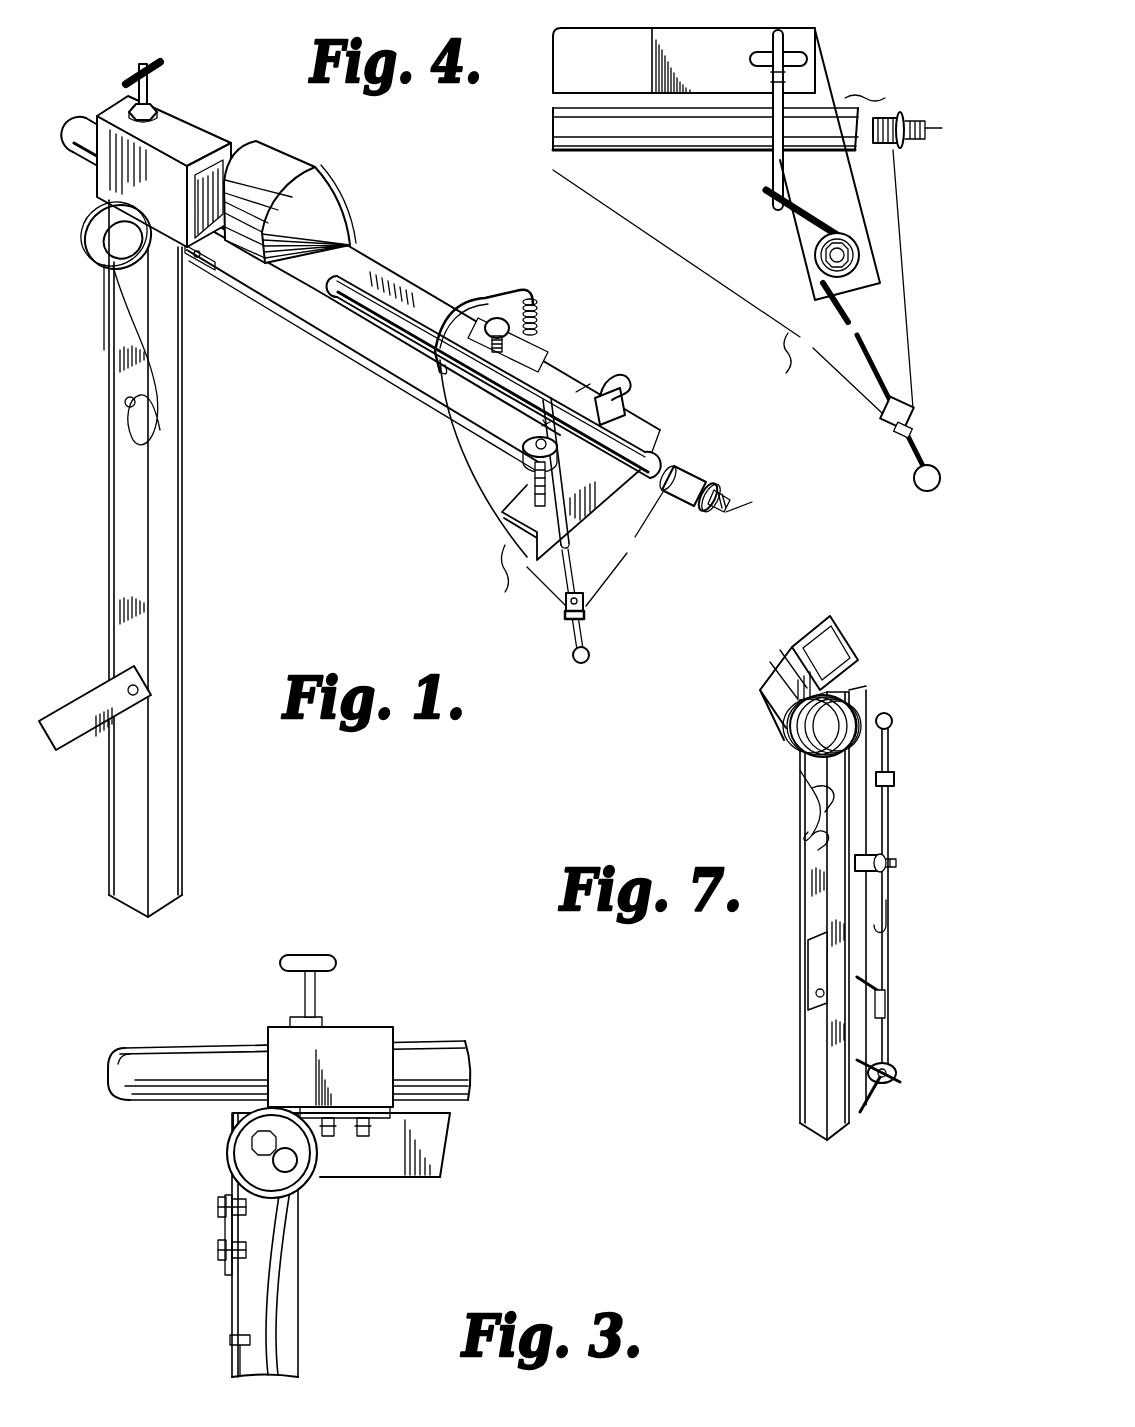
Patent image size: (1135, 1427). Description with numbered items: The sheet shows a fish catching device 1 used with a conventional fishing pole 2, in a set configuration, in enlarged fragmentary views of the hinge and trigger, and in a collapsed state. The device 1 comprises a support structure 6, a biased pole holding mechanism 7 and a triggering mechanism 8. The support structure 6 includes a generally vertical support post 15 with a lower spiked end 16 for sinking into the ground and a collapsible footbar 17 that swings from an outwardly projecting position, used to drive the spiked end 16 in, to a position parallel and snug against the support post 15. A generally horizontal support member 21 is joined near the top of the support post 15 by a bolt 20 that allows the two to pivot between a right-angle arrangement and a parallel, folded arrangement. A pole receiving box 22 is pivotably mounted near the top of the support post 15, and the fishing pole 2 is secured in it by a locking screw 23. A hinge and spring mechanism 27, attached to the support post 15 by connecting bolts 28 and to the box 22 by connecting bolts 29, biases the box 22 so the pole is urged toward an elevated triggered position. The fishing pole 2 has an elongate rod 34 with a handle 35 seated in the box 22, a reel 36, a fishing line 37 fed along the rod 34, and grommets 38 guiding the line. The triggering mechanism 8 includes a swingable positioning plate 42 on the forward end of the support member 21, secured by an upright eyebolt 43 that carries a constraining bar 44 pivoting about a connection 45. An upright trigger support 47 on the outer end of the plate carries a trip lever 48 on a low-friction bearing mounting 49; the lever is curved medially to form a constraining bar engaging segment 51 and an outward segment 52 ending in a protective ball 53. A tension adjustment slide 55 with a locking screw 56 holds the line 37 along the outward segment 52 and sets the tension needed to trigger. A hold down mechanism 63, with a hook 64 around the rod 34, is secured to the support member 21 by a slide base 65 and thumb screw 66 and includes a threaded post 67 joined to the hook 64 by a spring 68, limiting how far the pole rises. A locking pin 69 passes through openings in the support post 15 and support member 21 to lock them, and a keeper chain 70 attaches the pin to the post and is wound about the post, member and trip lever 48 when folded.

In FIG. 1, the fish catching device 1 is at (225, 523).
In FIG. 7, the fish catching device 1 is at (752, 1034).
In FIG. 1, the fishing pole 2 is at (426, 262).
In FIG. 4, the fishing pole 2 is at (566, 150).
In FIG. 3, the fishing pole 2 is at (163, 1028).
In FIG. 1, the support structure 6 is at (110, 448).
In FIG. 7, the support structure 6 is at (800, 918).
In FIG. 3, the support structure 6 is at (298, 1305).
In FIG. 1, the biased pole holding mechanism 7 is at (199, 93).
In FIG. 1, the triggering mechanism 8 is at (601, 343).
In FIG. 4, the triggering mechanism 8 is at (698, 210).
In FIG. 1, the support post 15 is at (183, 580).
In FIG. 7, the support post 15 is at (800, 1086).
In FIG. 1, the spiked end 16 is at (153, 913).
In FIG. 1, the footbar 17 is at (80, 755).
In FIG. 7, the footbar 17 is at (808, 968).
In FIG. 3, the bolt 20 is at (245, 1160).
In FIG. 1, the horizontal support member 21 is at (447, 297).
In FIG. 4, the horizontal support member 21 is at (601, 30).
In FIG. 3, the horizontal support member 21 is at (400, 1178).
In FIG. 1, the pole receiving box 22 is at (205, 128).
In FIG. 7, the pole receiving box 22 is at (848, 632).
In FIG. 3, the pole receiving box 22 is at (395, 1030).
In FIG. 1, the locking screw 23 is at (140, 62).
In FIG. 1, the hinge and spring mechanism 27 is at (96, 246).
In FIG. 7, the hinge and spring mechanism 27 is at (790, 740).
In FIG. 3, the hinge and spring mechanism 27 is at (305, 1195).
In FIG. 3, the connecting bolts 28 is at (216, 1250).
In FIG. 3, the connecting bolts 29 is at (362, 1140).
In FIG. 1, the rod 34 is at (382, 322).
In FIG. 4, the rod 34 is at (638, 152).
In FIG. 1, the handle 35 is at (82, 150).
In FIG. 1, the reel 36 is at (298, 156).
In FIG. 1, the fishing line 37 is at (487, 495).
In FIG. 4, the fishing line 37 is at (738, 292).
In FIG. 1, the grommets 38 is at (722, 488).
In FIG. 4, the grommets 38 is at (896, 112).
In FIG. 1, the positioning plate 42 is at (580, 510).
In FIG. 4, the positioning plate 42 is at (852, 168).
In FIG. 7, the positioning plate 42 is at (862, 1038).
In FIG. 1, the eyebolt 43 is at (626, 401).
In FIG. 1, the constraining bar 44 is at (582, 390).
In FIG. 4, the constraining bar 44 is at (772, 165).
In FIG. 1, the connection 45 is at (628, 380).
In FIG. 1, the trigger support 47 is at (533, 478).
In FIG. 4, the trigger support 47 is at (814, 256).
In FIG. 1, the trip lever 48 is at (572, 645).
In FIG. 4, the trip lever 48 is at (880, 358).
In FIG. 7, the trip lever 48 is at (890, 982).
In FIG. 1, the bearing mounting 49 is at (522, 447).
In FIG. 4, the bearing mounting 49 is at (822, 286).
In FIG. 7, the bearing mounting 49 is at (896, 1072).
In FIG. 1, the constraining bar engaging segment 51 is at (542, 424).
In FIG. 4, the constraining bar engaging segment 51 is at (798, 206).
In FIG. 7, the constraining bar engaging segment 51 is at (862, 1110).
In FIG. 1, the outward segment 52 is at (576, 576).
In FIG. 4, the outward segment 52 is at (906, 462).
In FIG. 1, the protective ball 53 is at (589, 656).
In FIG. 4, the protective ball 53 is at (916, 490).
In FIG. 7, the protective ball 53 is at (888, 714).
In FIG. 1, the tension adjustment slide 55 is at (590, 622).
In FIG. 4, the tension adjustment slide 55 is at (890, 432).
In FIG. 7, the tension adjustment slide 55 is at (892, 786).
In FIG. 1, the locking screw 56 is at (588, 605).
In FIG. 4, the locking screw 56 is at (886, 412).
In FIG. 1, the hold down mechanism 63 is at (444, 374).
In FIG. 1, the hook 64 is at (436, 358).
In FIG. 1, the slide base 65 is at (548, 346).
In FIG. 7, the slide base 65 is at (880, 856).
In FIG. 1, the thumb screw 66 is at (510, 293).
In FIG. 1, the threaded post 67 is at (540, 332).
In FIG. 1, the spring 68 is at (538, 300).
In FIG. 7, the locking pin 69 is at (810, 790).
In FIG. 3, the locking pin 69 is at (296, 1166).
In FIG. 7, the keeper chain 70 is at (812, 836).
In FIG. 3, the keeper chain 70 is at (285, 1250).